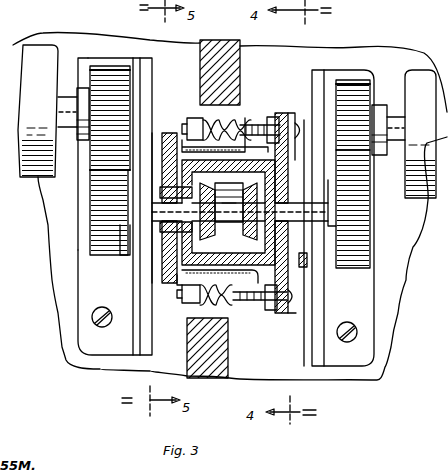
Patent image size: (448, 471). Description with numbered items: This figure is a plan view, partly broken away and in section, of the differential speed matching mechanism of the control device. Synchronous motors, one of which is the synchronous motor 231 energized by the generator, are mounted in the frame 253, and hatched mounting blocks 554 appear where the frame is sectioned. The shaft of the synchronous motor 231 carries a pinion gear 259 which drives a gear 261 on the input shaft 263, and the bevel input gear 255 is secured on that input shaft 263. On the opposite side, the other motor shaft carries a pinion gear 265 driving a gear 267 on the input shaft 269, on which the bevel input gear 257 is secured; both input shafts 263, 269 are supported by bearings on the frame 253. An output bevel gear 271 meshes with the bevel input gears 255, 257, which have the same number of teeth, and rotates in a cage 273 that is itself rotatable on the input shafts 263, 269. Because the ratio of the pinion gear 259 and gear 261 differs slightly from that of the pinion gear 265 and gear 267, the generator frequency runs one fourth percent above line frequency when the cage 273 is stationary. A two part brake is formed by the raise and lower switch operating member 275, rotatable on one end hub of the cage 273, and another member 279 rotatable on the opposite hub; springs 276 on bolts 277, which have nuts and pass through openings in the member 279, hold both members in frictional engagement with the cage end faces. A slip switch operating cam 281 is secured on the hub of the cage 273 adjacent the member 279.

The synchronous motor 231 is at (25, 72).
The frame 253 is at (333, 58).
The mounting block 554 is at (214, 68).
The pinion gear 259 is at (100, 72).
The gear 261 is at (89, 210).
The input shaft 263 is at (127, 245).
The member 279 is at (185, 138).
The raise and lower switch operating member 275 is at (284, 113).
The bevel input gear 255 is at (247, 236).
The bevel input gear 257 is at (244, 228).
The output bevel gear 271 is at (278, 141).
The cage 273 is at (231, 256).
The springs 276 is at (198, 122).
The bolts 277 is at (250, 120).
The slip switch operating cam 281 is at (160, 278).
The pinion gear 265 is at (370, 92).
The gear 267 is at (357, 247).
The input shaft 269 is at (328, 228).